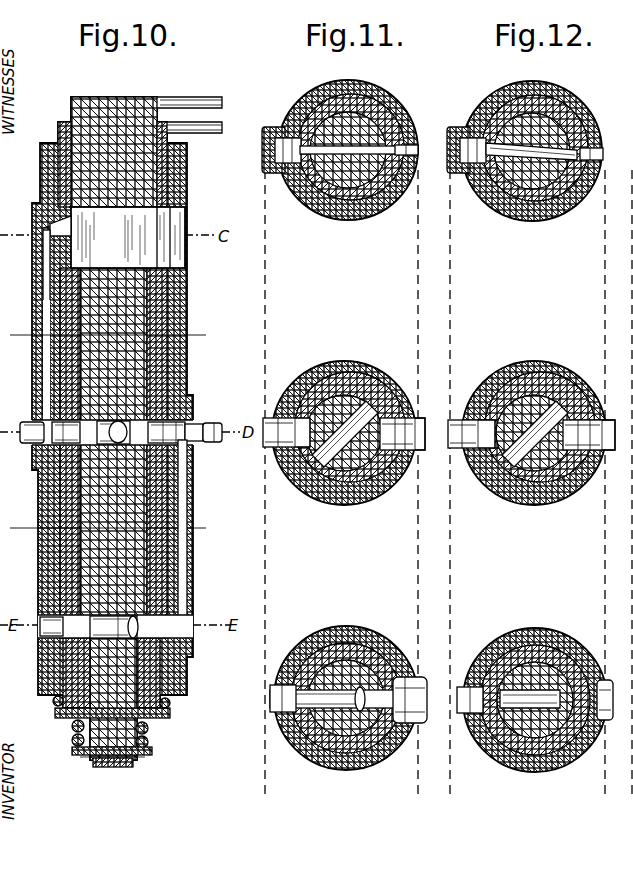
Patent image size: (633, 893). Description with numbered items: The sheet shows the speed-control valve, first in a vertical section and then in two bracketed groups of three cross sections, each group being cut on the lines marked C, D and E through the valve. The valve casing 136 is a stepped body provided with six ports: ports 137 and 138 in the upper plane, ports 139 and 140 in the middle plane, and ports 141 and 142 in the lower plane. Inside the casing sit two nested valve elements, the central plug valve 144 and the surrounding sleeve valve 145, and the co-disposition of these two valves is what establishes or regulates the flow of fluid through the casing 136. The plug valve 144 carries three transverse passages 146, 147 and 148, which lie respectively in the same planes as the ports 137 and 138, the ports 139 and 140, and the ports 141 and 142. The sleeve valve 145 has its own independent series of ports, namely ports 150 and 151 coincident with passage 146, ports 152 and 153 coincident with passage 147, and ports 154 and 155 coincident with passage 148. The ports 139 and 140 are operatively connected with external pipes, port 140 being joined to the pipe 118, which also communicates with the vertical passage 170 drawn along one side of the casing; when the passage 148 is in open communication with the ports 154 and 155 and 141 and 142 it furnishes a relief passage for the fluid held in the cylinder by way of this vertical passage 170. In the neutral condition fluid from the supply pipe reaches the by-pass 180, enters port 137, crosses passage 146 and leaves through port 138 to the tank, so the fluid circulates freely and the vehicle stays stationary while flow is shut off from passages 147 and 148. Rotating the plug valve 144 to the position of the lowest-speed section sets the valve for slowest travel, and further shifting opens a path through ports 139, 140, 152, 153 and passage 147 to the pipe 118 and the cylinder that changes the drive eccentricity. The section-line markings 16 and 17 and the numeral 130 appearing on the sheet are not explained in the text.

In FIG. 10, the section line 16 is at (112, 335).
In FIG. 10, the section line 17 is at (112, 528).
In FIG. 10, the pipe 118 is at (208, 420).
In FIG. 10, the pipe connection 130 is at (244, 145).
In FIG. 10, the valve casing 136 is at (33, 298).
In FIG. 11, the valve casing 136 is at (300, 388).
In FIG. 10, the port 137 is at (46, 242).
In FIG. 10, the port 138 is at (183, 254).
In FIG. 11, the port 138 is at (420, 150).
In FIG. 12, the port 138 is at (466, 424).
In FIG. 10, the port 139 is at (40, 446).
In FIG. 11, the port 139 is at (278, 447).
In FIG. 10, the port 140 is at (194, 458).
In FIG. 11, the port 140 is at (428, 440).
In FIG. 12, the port 140 is at (612, 455).
In FIG. 10, the port 141 is at (50, 632).
In FIG. 10, the port 142 is at (209, 648).
In FIG. 10, the plug valve 144 is at (113, 112).
In FIG. 10, the sleeve valve 145 is at (170, 170).
In FIG. 12, the sleeve valve 145 is at (556, 400).
In FIG. 10, the transverse passage 146 is at (128, 237).
In FIG. 11, the transverse passage 146 is at (356, 154).
In FIG. 12, the transverse passage 146 is at (546, 154).
In FIG. 10, the transverse passage 147 is at (108, 436).
In FIG. 11, the transverse passage 147 is at (332, 452).
In FIG. 12, the transverse passage 147 is at (522, 452).
In FIG. 10, the transverse passage 148 is at (110, 632).
In FIG. 11, the transverse passage 148 is at (350, 702).
In FIG. 11, the port 150 is at (296, 162).
In FIG. 11, the port 151 is at (398, 148).
In FIG. 11, the port 152 is at (302, 445).
In FIG. 12, the port 152 is at (490, 446).
In FIG. 11, the port 153 is at (395, 416).
In FIG. 12, the port 153 is at (566, 468).
In FIG. 11, the port 154 is at (318, 728).
In FIG. 12, the port 154 is at (505, 735).
In FIG. 11, the port 155 is at (372, 672).
In FIG. 12, the port 155 is at (552, 676).
In FIG. 10, the vertical passage 170 is at (183, 571).
In FIG. 10, the by-pass 180 is at (43, 350).
In FIG. 11, the by-pass 180 is at (266, 148).